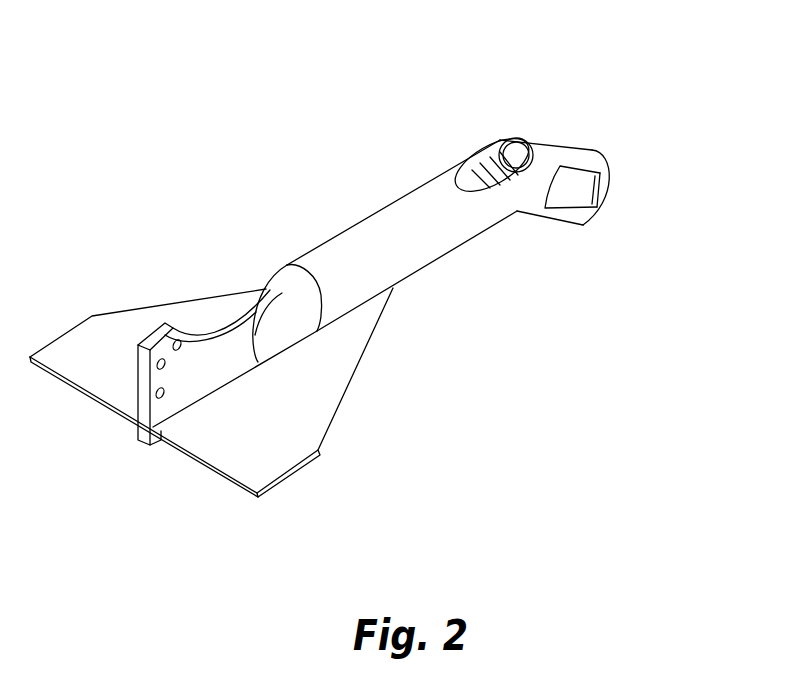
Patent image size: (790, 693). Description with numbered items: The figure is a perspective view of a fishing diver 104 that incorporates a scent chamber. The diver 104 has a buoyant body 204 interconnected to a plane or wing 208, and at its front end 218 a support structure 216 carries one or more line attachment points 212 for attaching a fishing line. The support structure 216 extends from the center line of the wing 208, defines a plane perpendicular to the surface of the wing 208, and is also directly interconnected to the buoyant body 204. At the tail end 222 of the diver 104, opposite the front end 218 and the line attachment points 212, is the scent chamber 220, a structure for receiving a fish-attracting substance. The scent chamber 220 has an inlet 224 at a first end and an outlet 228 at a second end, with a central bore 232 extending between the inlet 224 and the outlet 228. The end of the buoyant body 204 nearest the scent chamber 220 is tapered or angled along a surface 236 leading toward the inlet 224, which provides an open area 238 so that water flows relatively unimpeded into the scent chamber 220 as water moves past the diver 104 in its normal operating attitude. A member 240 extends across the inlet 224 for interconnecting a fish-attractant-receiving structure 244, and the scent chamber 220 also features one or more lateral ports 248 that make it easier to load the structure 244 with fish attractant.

The diver 104 is at (362, 208).
The buoyant body 204 is at (403, 207).
The wing 208 is at (312, 418).
The line attachment points 212 is at (148, 415).
The support structure 216 is at (218, 332).
The front end 218 is at (143, 410).
The scent chamber 220 is at (573, 158).
The tail end 222 is at (605, 155).
The inlet 224 is at (513, 150).
The outlet 228 is at (596, 211).
The central bore 232 is at (522, 162).
The tapered surface 236 is at (465, 178).
The open area 238 is at (482, 185).
The member 240 is at (500, 147).
The fish-attractant-receiving structure 244 is at (570, 192).
The lateral ports 248 is at (598, 186).